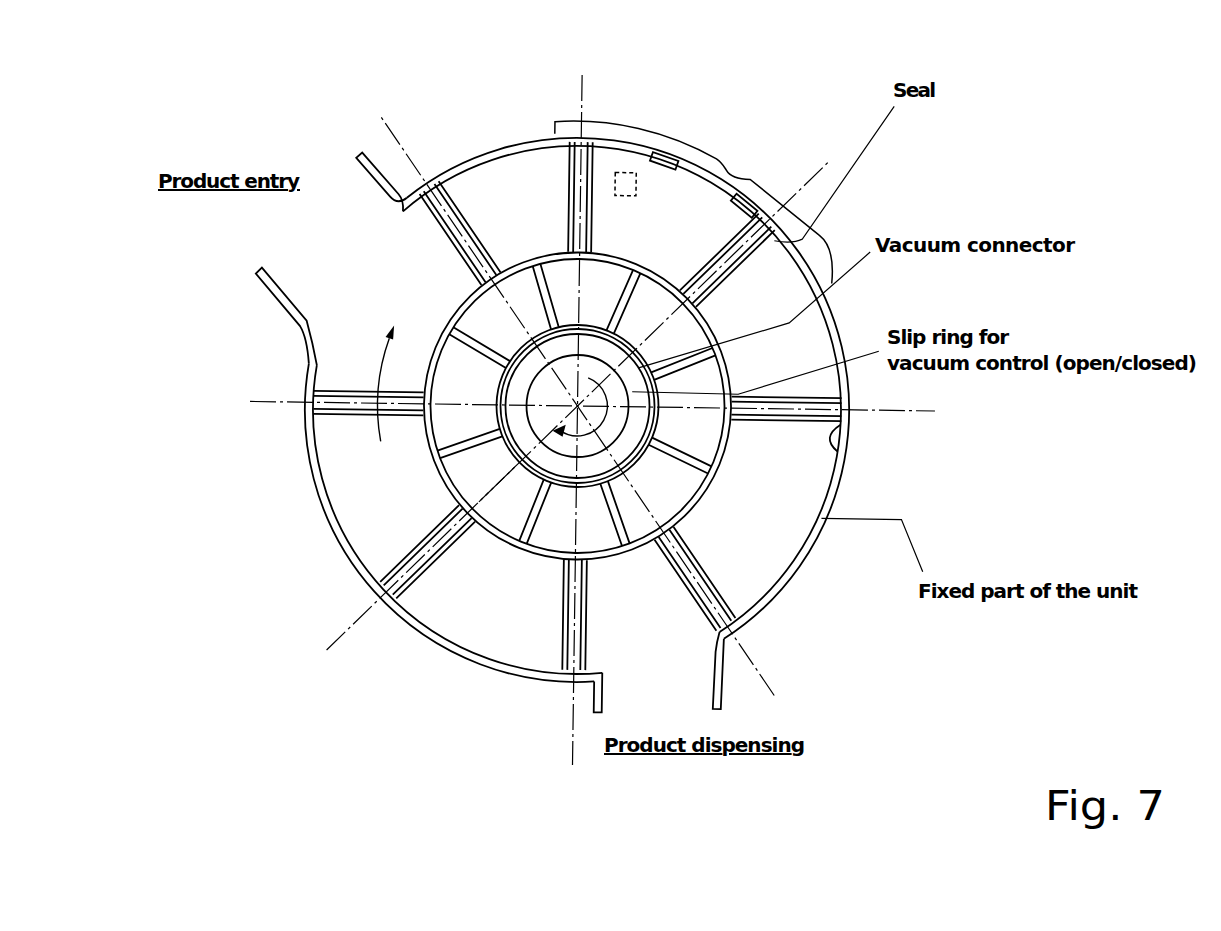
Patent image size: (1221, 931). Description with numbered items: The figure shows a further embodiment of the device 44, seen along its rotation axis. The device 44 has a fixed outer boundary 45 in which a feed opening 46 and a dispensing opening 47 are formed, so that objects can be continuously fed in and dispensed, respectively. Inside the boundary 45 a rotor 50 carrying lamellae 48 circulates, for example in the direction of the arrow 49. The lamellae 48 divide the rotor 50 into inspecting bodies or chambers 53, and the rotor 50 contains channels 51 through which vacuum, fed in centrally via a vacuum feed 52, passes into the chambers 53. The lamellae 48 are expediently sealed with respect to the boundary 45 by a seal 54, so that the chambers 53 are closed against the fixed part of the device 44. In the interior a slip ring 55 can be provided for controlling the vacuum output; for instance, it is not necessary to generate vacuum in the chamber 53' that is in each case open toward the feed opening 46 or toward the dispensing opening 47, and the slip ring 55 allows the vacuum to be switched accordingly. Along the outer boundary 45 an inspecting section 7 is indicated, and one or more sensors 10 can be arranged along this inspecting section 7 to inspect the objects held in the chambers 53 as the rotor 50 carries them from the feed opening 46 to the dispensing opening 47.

The inspecting section 7 is at (694, 202).
The sensor 10 is at (622, 172).
The device 44 is at (272, 524).
The outer boundary 45 is at (800, 572).
The feed opening 46 is at (331, 258).
The dispensing opening 47 is at (659, 672).
The lamellae 48 is at (403, 554).
The arrow 49 is at (368, 416).
The rotor 50 is at (505, 508).
The channels 51 is at (548, 480).
The vacuum feed 52 is at (577, 405).
The chambers 53 is at (606, 374).
The chamber open to the feed or dispensing opening 53' is at (521, 441).
The seal 54 is at (840, 447).
The slip ring 55 is at (518, 443).